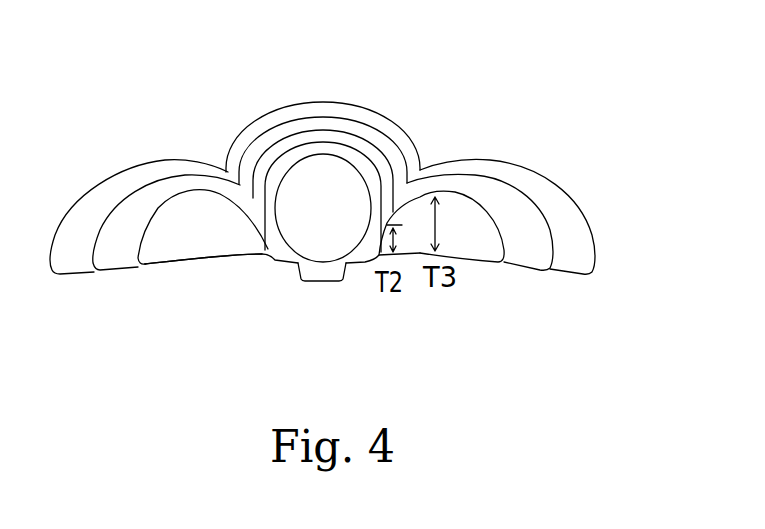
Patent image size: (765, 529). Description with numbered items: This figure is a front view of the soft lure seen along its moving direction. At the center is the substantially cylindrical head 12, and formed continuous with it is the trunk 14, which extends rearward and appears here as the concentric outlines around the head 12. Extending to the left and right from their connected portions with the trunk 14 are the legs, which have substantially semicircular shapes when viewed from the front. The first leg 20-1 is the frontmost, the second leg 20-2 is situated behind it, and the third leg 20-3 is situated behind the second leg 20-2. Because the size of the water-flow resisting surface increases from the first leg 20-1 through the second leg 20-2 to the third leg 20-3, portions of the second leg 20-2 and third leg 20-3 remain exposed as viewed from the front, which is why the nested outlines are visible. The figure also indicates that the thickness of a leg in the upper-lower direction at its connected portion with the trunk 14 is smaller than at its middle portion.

The head 12 is at (321, 230).
The trunk 14 is at (356, 116).
The first leg 20-1 is at (223, 248).
The second leg 20-2 is at (112, 252).
The third leg 20-3 is at (113, 182).